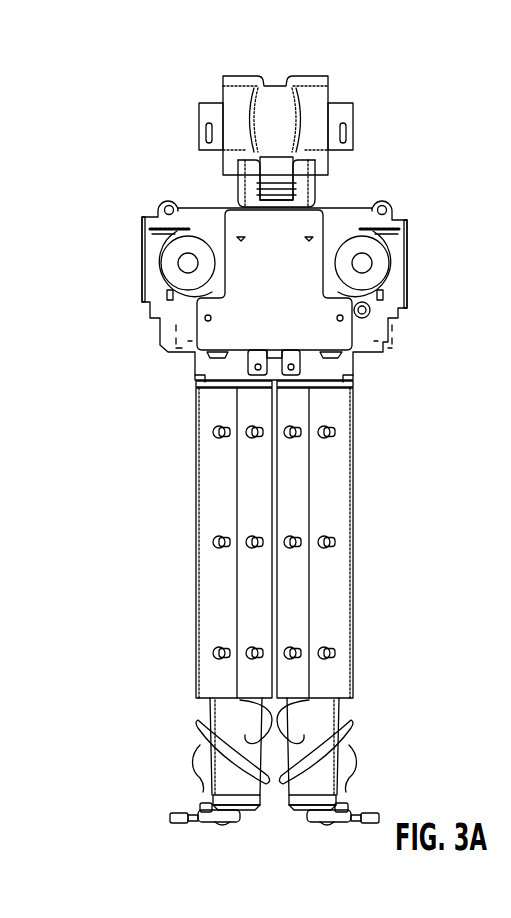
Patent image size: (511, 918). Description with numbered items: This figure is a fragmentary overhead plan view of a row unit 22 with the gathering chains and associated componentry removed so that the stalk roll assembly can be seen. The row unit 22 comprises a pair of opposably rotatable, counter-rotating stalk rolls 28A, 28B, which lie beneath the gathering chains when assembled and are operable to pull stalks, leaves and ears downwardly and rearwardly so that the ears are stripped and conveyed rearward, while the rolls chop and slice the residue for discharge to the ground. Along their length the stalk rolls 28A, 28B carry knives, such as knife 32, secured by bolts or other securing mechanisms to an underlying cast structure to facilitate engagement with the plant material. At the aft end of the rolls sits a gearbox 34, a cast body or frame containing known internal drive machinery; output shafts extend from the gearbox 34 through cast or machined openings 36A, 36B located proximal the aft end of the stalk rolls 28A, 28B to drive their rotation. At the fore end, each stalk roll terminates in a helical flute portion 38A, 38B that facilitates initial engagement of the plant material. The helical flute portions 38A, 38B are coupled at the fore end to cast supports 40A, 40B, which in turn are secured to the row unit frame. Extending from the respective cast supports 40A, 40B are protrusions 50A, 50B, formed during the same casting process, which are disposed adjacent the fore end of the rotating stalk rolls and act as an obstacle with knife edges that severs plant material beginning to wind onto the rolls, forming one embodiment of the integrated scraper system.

The row unit 22 is at (196, 90).
The gearbox 34 is at (138, 225).
The opening 36A is at (189, 387).
The opening 36B is at (360, 387).
The knife 32 is at (218, 480).
The stalk roll 28A is at (192, 543).
The stalk roll 28B is at (352, 522).
The helical flute portion 38A is at (193, 722).
The helical flute portion 38B is at (345, 730).
The protrusion 50A is at (203, 802).
The protrusion 50B is at (340, 805).
The cast support 40A is at (178, 818).
The cast support 40B is at (356, 818).